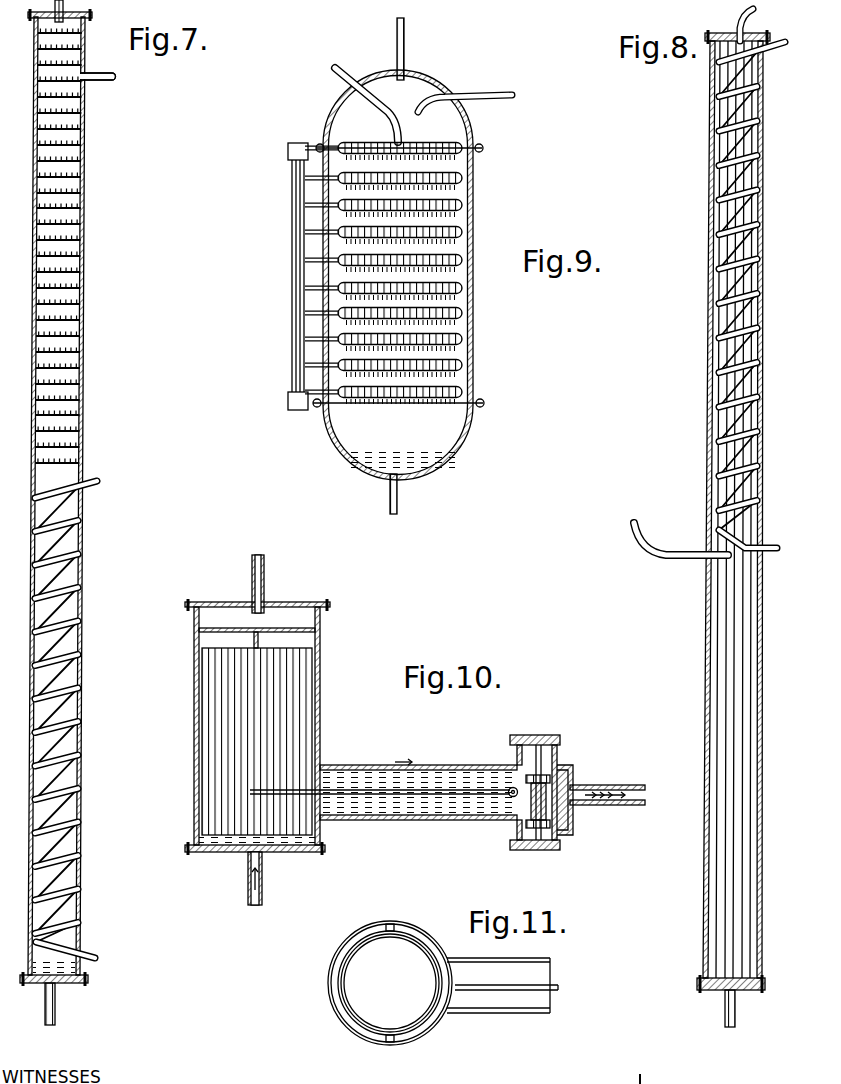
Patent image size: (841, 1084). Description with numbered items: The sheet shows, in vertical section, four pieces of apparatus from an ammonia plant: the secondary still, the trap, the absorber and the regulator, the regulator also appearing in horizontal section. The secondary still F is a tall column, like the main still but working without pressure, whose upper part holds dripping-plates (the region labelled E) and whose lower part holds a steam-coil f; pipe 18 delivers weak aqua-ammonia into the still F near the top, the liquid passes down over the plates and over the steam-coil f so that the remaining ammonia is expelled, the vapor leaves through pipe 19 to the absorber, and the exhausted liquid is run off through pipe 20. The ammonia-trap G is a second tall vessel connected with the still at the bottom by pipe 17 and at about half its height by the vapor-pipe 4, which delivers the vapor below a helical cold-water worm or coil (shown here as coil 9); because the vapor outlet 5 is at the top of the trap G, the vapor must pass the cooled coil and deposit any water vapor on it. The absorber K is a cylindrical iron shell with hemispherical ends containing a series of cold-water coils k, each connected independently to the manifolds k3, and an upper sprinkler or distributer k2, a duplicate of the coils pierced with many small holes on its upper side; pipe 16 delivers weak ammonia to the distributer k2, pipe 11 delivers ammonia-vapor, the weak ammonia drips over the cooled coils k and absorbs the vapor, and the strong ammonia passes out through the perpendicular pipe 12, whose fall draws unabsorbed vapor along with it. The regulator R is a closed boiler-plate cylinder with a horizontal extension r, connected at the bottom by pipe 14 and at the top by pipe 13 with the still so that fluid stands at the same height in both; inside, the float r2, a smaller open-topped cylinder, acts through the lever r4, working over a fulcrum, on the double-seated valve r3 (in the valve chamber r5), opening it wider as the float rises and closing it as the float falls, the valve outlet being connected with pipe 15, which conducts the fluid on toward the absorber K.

In FIG. 7, the fractionating column with trays E is at (81, 224).
In FIG. 7, the secondary still F is at (30, 469).
In FIG. 7, the steam-coil f is at (71, 720).
In FIG. 7, the pipe 18 is at (100, 84).
In FIG. 7, the pipe 19 is at (55, 6).
In FIG. 9, the pipe 19 is at (404, 46).
In FIG. 7, the pipe 20 is at (59, 1004).
In FIG. 9, the absorber K is at (398, 275).
In FIG. 9, the coils k is at (470, 182).
In FIG. 9, the sprinkler or distributer k2 is at (383, 141).
In FIG. 9, the manifolds k3 is at (378, 276).
In FIG. 9, the pipe 11 is at (465, 95).
In FIG. 9, the perpendicular pipe 12 is at (385, 494).
In FIG. 9, the pipe 16 is at (364, 105).
In FIG. 8, the ammonia-trap G is at (764, 470).
In FIG. 8, the vapor-pipe 4 is at (681, 550).
In FIG. 8, the outlet 5 is at (750, 25).
In FIG. 8, the cooling coil 9 is at (745, 296).
In FIG. 8, the pipe 17 is at (721, 1008).
In FIG. 10, the regulator R is at (263, 727).
In FIG. 11, the regulator R is at (328, 985).
In FIG. 11, the horizontal extension r is at (498, 994).
In FIG. 10, the float r2 is at (257, 734).
In FIG. 11, the float r2 is at (390, 983).
In FIG. 10, the double-seated valve r3 is at (418, 789).
In FIG. 10, the lever r4 is at (384, 776).
In FIG. 11, the lever r4 is at (506, 993).
In FIG. 10, the valve r5 is at (541, 792).
In FIG. 10, the pipe 13 is at (270, 584).
In FIG. 10, the pipe 14 is at (266, 885).
In FIG. 10, the pipe 15 is at (607, 786).